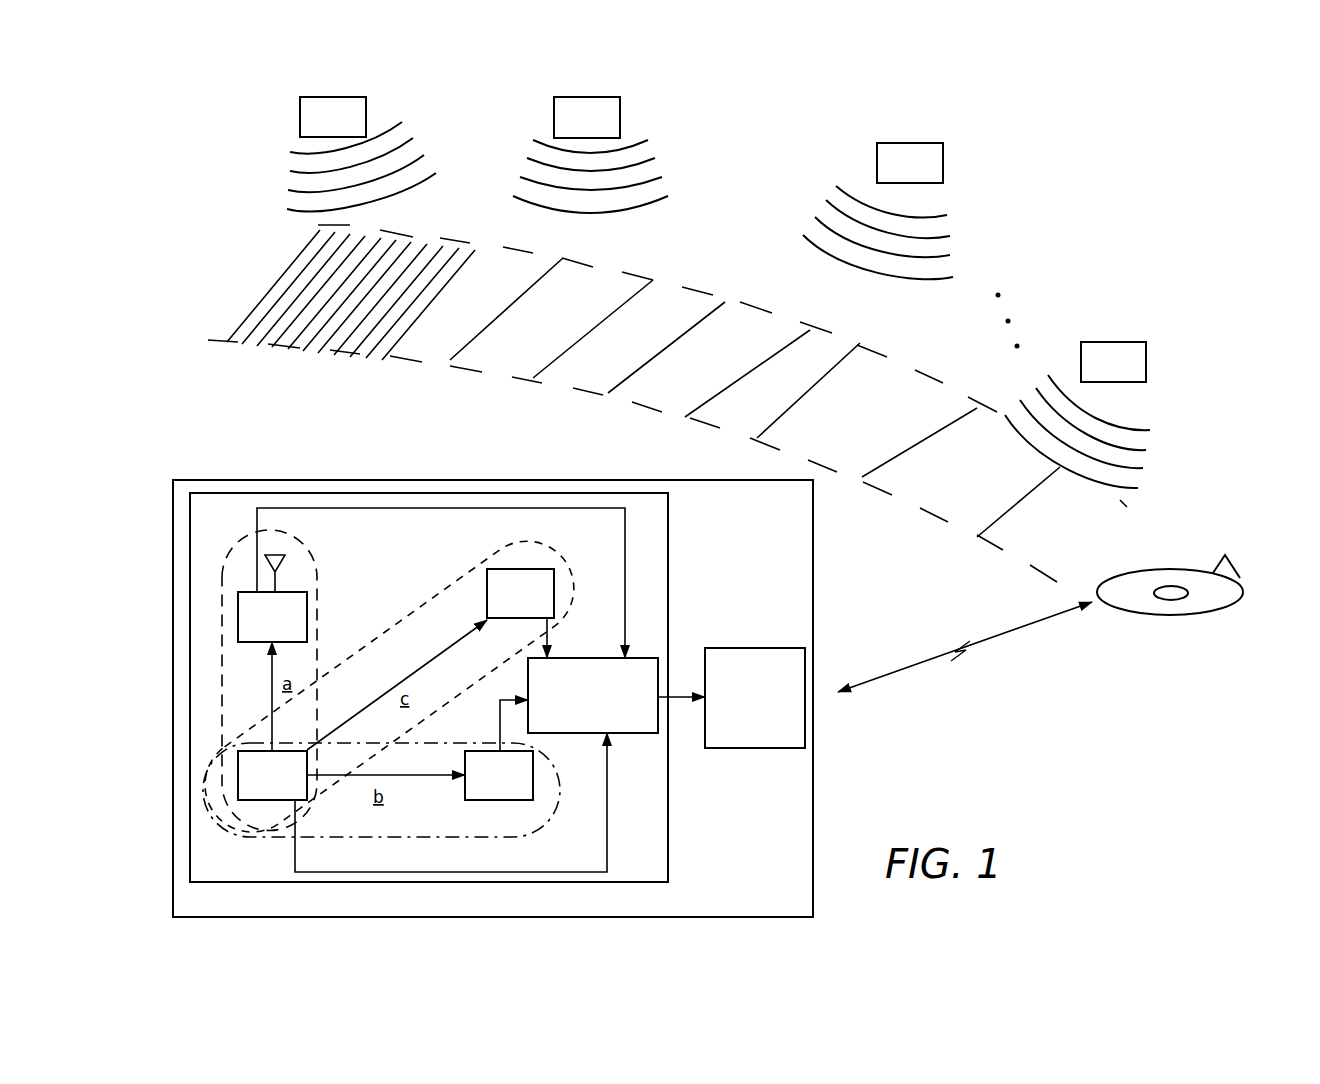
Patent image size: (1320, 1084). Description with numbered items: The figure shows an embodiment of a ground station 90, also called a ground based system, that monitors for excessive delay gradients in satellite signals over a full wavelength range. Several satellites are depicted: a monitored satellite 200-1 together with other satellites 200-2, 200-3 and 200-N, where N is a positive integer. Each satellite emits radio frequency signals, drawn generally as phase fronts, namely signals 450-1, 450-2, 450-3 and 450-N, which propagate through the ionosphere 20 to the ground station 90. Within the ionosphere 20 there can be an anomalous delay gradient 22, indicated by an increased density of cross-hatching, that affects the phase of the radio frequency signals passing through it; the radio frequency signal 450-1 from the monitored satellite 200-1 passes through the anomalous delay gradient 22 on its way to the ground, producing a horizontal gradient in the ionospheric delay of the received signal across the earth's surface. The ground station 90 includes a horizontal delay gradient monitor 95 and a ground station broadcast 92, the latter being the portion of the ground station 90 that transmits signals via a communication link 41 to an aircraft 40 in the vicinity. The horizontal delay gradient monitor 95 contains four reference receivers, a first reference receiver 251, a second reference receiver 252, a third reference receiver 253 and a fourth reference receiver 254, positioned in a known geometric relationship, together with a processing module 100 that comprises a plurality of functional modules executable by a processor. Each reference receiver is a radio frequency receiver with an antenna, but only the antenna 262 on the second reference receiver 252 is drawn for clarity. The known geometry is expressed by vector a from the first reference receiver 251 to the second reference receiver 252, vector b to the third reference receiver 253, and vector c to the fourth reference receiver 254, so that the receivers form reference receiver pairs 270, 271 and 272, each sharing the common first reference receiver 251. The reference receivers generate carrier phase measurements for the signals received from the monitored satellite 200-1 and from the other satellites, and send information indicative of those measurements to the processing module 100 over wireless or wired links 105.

The monitored satellite 200-1 is at (333, 117).
The satellite 200-2 is at (587, 117).
The satellite 200-3 is at (910, 163).
The satellite 200-N is at (1113, 362).
The radio frequency signal 450-1 is at (280, 145).
The radio frequency signal 450-2 is at (660, 137).
The radio frequency signal 450-3 is at (957, 213).
The radio frequency signal 450-N is at (1150, 430).
The ionosphere 20 is at (612, 268).
The anomalous delay gradient 22 is at (380, 360).
The aircraft 40 is at (1147, 617).
The communication link 41 is at (982, 648).
The ground station 90 is at (493, 698).
The ground station broadcast 92 is at (755, 698).
The horizontal delay gradient monitor 95 is at (668, 628).
The processing module 100 is at (593, 695).
The wireless or wired links 105 is at (627, 585).
The first reference receiver 251 is at (278, 800).
The second reference receiver 252 is at (307, 627).
The third reference receiver 253 is at (513, 800).
The fourth reference receiver 254 is at (507, 620).
The antenna 262 is at (258, 563).
The reference receiver pair 270 is at (313, 572).
The reference receiver pair 271 is at (363, 837).
The reference receiver pair 272 is at (570, 565).